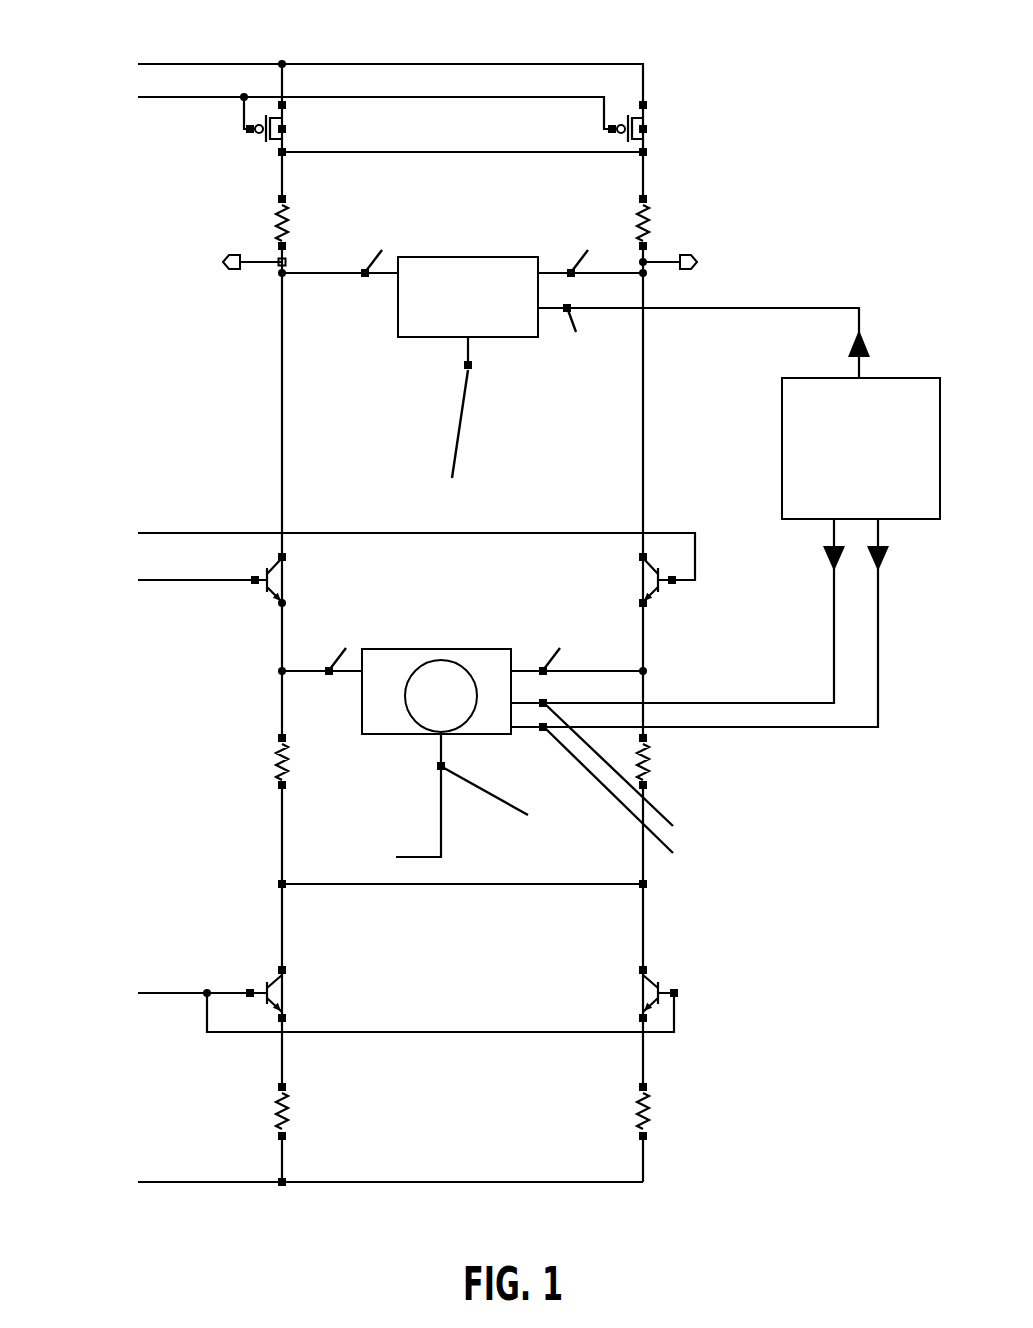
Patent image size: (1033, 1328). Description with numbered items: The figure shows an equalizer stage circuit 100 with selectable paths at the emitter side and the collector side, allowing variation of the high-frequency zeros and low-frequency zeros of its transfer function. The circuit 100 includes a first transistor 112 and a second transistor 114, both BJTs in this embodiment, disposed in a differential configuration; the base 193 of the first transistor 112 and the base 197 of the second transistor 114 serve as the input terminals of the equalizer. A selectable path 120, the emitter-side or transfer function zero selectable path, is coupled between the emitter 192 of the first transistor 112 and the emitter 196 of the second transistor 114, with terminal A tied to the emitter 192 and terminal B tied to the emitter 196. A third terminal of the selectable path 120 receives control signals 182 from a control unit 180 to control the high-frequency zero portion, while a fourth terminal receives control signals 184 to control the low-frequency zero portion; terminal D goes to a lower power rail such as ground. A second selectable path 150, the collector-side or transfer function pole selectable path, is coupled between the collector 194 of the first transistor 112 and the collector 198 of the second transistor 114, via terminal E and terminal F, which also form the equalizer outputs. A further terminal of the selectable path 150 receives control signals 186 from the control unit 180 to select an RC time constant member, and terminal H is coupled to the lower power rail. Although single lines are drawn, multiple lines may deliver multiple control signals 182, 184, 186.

The equalizer stage circuit 100 is at (104, 54).
The first transistor 112 is at (262, 568).
The second transistor 114 is at (663, 572).
The selectable path 120 is at (417, 647).
The selectable path 150 is at (482, 338).
The control unit 180 is at (861, 448).
The control signals 182 is at (828, 565).
The control signals 184 is at (883, 557).
The control signals 186 is at (863, 340).
The emitter 192 is at (278, 604).
The base 193 is at (250, 578).
The collector 194 is at (287, 557).
The emitter 196 is at (640, 604).
The base 197 is at (674, 584).
The collector 198 is at (640, 557).